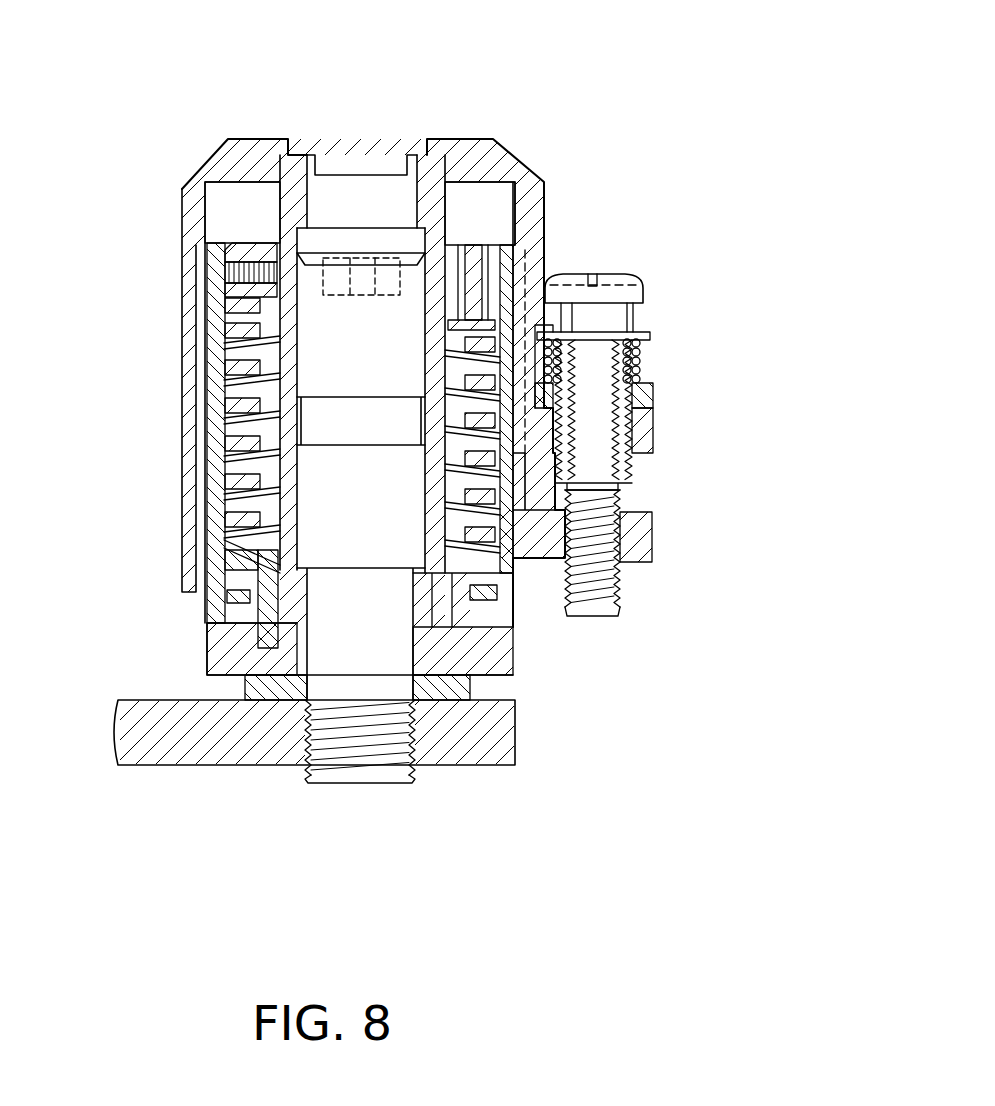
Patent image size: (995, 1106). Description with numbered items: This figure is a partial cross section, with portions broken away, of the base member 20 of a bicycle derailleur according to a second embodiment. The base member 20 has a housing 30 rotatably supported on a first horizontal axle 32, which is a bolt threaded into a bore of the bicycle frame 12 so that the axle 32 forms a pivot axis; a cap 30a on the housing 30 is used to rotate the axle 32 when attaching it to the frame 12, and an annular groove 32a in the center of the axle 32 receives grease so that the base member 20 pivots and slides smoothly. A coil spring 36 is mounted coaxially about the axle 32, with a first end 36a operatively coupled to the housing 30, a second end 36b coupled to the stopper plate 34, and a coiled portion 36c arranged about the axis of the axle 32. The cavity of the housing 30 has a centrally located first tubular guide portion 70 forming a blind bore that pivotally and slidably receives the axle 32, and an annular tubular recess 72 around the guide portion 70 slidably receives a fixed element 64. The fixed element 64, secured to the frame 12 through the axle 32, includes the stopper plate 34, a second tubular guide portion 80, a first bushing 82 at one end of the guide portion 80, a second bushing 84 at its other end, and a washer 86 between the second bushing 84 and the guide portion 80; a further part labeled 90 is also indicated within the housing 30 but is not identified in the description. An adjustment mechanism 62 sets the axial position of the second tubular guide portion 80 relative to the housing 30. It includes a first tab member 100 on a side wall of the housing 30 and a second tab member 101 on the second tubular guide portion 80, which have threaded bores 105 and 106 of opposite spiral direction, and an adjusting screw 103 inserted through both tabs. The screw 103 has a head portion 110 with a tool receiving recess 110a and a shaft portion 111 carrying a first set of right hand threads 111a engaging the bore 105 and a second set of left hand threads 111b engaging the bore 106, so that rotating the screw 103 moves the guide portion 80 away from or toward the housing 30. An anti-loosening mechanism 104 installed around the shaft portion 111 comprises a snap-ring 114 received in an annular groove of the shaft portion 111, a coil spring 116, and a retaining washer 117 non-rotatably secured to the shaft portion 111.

The base member 20 is at (636, 146).
The housing 30 is at (481, 134).
The cap 30a is at (380, 138).
The first tubular guide portion 70 is at (418, 326).
The annular groove 32a is at (345, 432).
The first horizontal axle 32 is at (382, 792).
The first coil spring 36 is at (274, 377).
The first end 36a is at (480, 248).
The second end 36b is at (240, 692).
The coiled portion 36c is at (262, 378).
The annular tubular recess 72 is at (218, 210).
The spring cap 90 is at (205, 272).
The second tubular guide portion 80 is at (205, 445).
The first bushing 82 is at (488, 238).
The second bushing 84 is at (404, 602).
The washer 86 is at (240, 612).
The fixed element 64 is at (190, 630).
The stopper plate 34 is at (515, 652).
The bicycle frame 12 is at (516, 740).
The adjustment mechanism 62 is at (702, 378).
The head portion 110 is at (656, 308).
The tool receiving recess 110a is at (592, 272).
The adjusting screw 103 is at (641, 261).
The anti-loosening mechanism 104 is at (655, 333).
The snap-ring 114 is at (645, 345).
The coil spring 116 is at (646, 370).
The retaining washer 117 is at (660, 395).
The first tab member 100 is at (655, 430).
The threaded bore 105 is at (622, 468).
The second tab member 101 is at (655, 530).
The shaft portion 111 is at (597, 618).
The first set of right hand threads 111a is at (630, 490).
The second set of left hand threads 111b is at (622, 612).
The threaded bore 106 is at (623, 595).